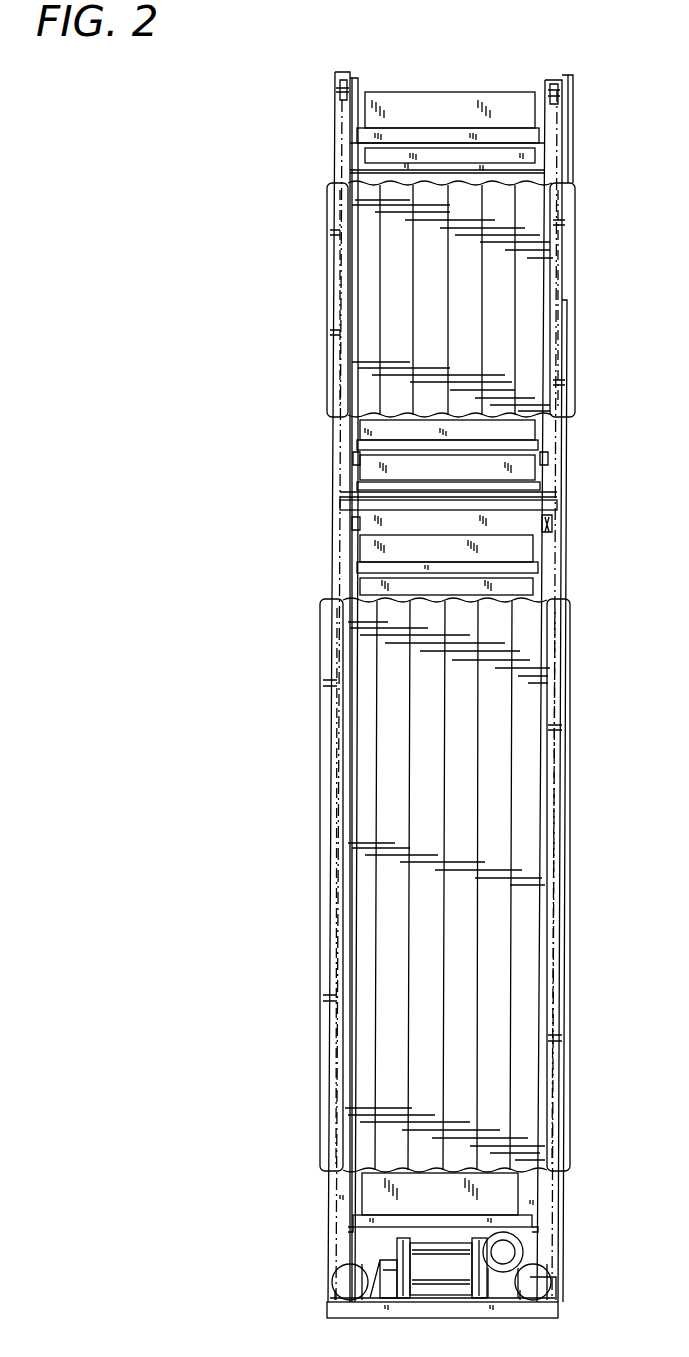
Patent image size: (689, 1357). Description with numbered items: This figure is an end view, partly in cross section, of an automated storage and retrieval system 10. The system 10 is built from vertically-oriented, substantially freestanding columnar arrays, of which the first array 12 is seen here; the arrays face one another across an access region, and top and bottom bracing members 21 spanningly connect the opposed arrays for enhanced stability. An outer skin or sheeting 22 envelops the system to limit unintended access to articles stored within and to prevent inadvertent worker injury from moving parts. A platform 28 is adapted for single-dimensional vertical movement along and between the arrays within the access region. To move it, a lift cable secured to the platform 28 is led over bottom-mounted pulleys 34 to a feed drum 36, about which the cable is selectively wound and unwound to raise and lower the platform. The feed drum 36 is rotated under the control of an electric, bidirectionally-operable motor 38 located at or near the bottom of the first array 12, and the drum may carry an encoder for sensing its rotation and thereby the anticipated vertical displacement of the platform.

The automated storage and retrieval system 10 is at (420, 66).
The first columnar array 12 is at (500, 91).
The outer skin or sheeting 22 is at (365, 260).
The platform 28 is at (323, 478).
The feed drum 36 is at (435, 1253).
The motor 38 is at (503, 1251).
The bottom-mounted pulleys 34 is at (358, 1280).
The bracing members 21 is at (365, 1315).